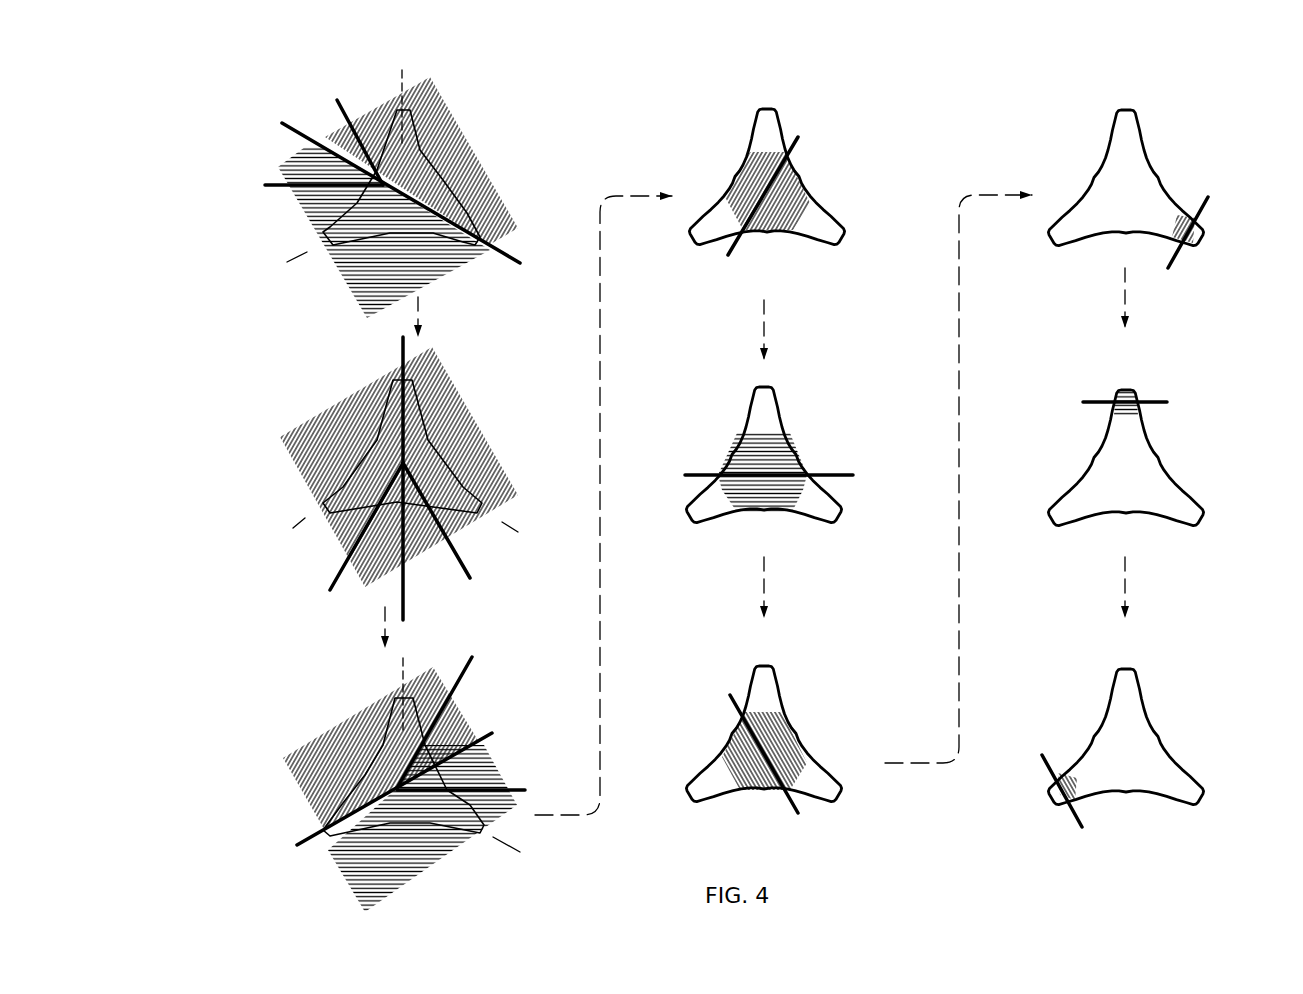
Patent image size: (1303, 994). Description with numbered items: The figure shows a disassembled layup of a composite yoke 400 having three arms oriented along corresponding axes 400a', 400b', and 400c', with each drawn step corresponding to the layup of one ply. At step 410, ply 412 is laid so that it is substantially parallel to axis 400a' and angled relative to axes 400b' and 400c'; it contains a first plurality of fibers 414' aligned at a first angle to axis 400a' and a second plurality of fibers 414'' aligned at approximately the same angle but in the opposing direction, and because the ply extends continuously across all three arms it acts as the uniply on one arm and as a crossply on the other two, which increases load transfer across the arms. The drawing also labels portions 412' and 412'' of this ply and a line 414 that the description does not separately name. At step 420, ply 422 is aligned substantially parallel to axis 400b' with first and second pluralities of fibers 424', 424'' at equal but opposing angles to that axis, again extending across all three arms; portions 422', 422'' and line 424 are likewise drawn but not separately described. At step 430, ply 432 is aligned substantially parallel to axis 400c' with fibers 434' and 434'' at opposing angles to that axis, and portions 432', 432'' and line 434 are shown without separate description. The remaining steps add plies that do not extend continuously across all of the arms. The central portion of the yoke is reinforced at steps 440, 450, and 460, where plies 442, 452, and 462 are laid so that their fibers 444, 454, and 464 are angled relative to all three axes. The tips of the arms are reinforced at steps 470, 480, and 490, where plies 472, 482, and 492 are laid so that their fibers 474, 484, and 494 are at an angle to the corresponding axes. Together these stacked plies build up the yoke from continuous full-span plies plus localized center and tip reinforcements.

The yoke 400 is at (177, 110).
The axis of the first arm 400a' is at (524, 579).
The axis of the second arm 400b' is at (360, 400).
The axis of the third arm 400c' is at (260, 550).
The first layup step 410 is at (490, 123).
The first ply 412 is at (432, 161).
The first cutting plane upper portion 412' is at (502, 152).
The first cutting plane lower portion 412'' is at (384, 232).
The first cut line 414 is at (361, 190).
The first plurality of fibers 414' is at (320, 136).
The second plurality of fibers 414'' is at (304, 206).
The second layup step 420 is at (495, 410).
The second ply 422 is at (369, 467).
The second cutting plane left portion 422' is at (331, 392).
The second cutting plane right portion 422'' is at (500, 421).
The second cut line 424 is at (439, 479).
The first plurality of fibers 424' is at (330, 529).
The second plurality of fibers 424'' is at (481, 524).
The third layup step 430 is at (258, 717).
The third ply 432 is at (381, 748).
The third cutting plane upper portion 432' is at (316, 712).
The third cutting plane lower portion 432'' is at (398, 828).
The third cut line 434 is at (411, 767).
The first plurality of fibers 434' is at (471, 716).
The second plurality of fibers 434'' is at (480, 769).
The central reinforcement step 440 is at (815, 160).
The central reinforcing ply 442 is at (740, 178).
The fibers of the central reinforcing ply 444 is at (740, 252).
The central reinforcement step 450 is at (800, 428).
The central reinforcing ply 452 is at (725, 456).
The fibers of the central reinforcing ply 454 is at (840, 471).
The central reinforcement step 460 is at (815, 712).
The central reinforcing ply 462 is at (752, 790).
The fibers of the central reinforcing ply 464 is at (735, 710).
The arm tip reinforcement step 470 is at (1205, 142).
The arm tip reinforcing ply 472 is at (1200, 242).
The fibers of the arm tip reinforcing ply 474 is at (1212, 201).
The arm tip reinforcement step 480 is at (1200, 410).
The arm tip reinforcing ply 482 is at (1120, 388).
The fibers of the arm tip reinforcing ply 484 is at (1150, 400).
The arm tip reinforcement step 490 is at (1177, 697).
The arm tip reinforcing ply 492 is at (1050, 800).
The fibers of the arm tip reinforcing ply 494 is at (1085, 820).